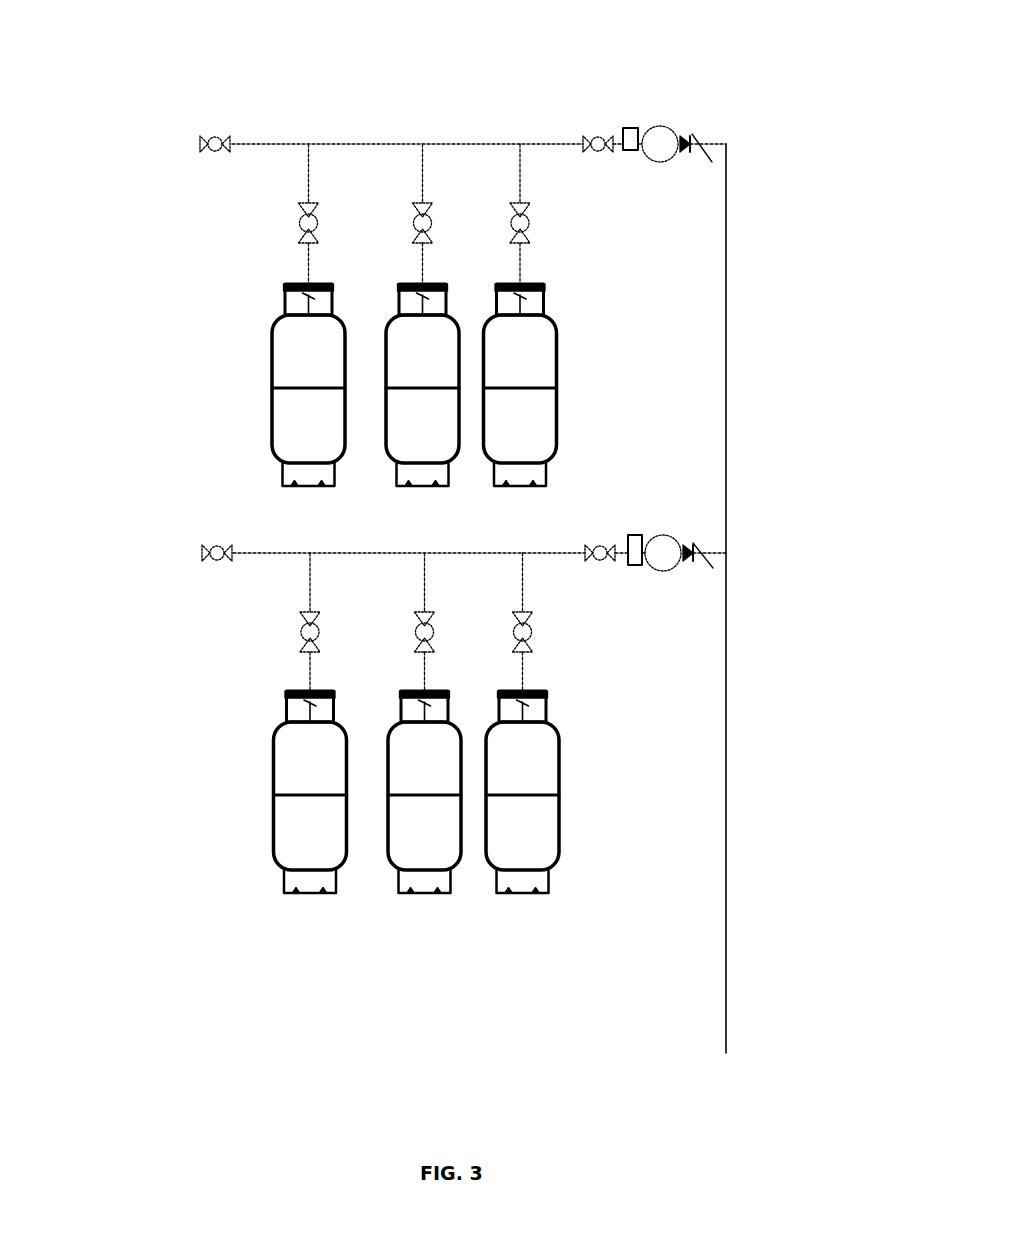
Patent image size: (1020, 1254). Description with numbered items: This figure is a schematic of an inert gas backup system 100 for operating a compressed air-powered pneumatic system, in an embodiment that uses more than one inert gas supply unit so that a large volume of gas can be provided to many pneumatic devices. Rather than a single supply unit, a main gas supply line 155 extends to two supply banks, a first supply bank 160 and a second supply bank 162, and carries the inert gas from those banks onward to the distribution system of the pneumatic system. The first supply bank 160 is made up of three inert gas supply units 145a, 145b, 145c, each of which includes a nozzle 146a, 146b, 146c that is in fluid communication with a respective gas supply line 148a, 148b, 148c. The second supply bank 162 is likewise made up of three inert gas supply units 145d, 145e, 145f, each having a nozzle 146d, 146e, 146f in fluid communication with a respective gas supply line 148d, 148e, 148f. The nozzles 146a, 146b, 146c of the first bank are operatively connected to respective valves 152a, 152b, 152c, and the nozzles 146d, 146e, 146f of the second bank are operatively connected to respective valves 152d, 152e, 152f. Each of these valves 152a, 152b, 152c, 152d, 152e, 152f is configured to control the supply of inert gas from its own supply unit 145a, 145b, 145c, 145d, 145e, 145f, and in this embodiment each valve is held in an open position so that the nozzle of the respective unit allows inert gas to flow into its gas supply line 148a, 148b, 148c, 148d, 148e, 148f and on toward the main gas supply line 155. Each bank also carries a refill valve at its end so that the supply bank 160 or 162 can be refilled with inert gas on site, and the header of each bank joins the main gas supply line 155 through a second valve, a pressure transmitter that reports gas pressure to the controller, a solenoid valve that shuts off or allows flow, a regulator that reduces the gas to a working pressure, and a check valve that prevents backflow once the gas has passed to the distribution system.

The inert gas backup system 100 is at (103, 76).
The inert gas supply unit 145a is at (558, 754).
The inert gas supply unit 145b is at (450, 722).
The inert gas supply unit 145c is at (273, 772).
The inert gas supply unit 145d is at (547, 318).
The inert gas supply unit 145e is at (447, 315).
The inert gas supply unit 145f is at (272, 356).
The nozzle 146a is at (545, 698).
The nozzle 146b is at (405, 697).
The nozzle 146c is at (290, 700).
The nozzle 146d is at (542, 283).
The nozzle 146e is at (405, 285).
The nozzle 146f is at (290, 288).
The gas supply line 148a is at (521, 592).
The gas supply line 148b is at (424, 592).
The gas supply line 148c is at (310, 592).
The gas supply line 148d is at (519, 182).
The gas supply line 148e is at (421, 188).
The gas supply line 148f is at (308, 190).
The valve 152a is at (530, 636).
The valve 152b is at (432, 636).
The valve 152c is at (318, 636).
The valve 152d is at (528, 222).
The valve 152e is at (428, 228).
The valve 152f is at (315, 228).
The main gas supply line 155 is at (730, 618).
The first supply bank 160 is at (171, 680).
The second supply bank 162 is at (127, 249).